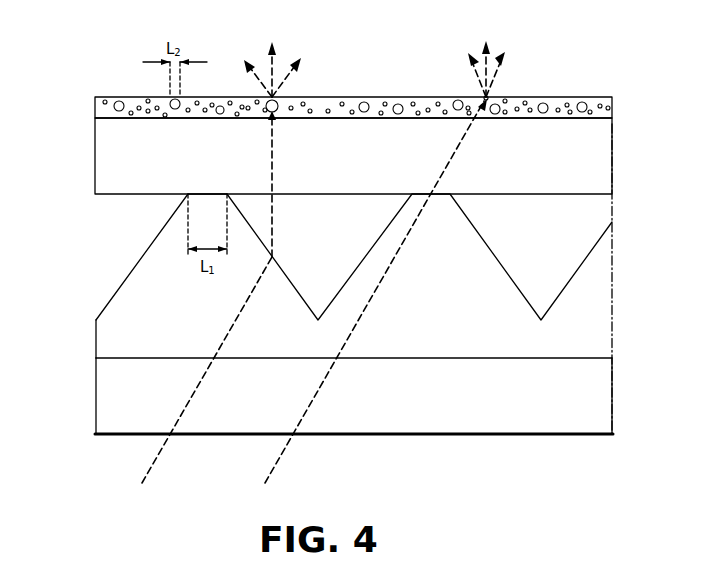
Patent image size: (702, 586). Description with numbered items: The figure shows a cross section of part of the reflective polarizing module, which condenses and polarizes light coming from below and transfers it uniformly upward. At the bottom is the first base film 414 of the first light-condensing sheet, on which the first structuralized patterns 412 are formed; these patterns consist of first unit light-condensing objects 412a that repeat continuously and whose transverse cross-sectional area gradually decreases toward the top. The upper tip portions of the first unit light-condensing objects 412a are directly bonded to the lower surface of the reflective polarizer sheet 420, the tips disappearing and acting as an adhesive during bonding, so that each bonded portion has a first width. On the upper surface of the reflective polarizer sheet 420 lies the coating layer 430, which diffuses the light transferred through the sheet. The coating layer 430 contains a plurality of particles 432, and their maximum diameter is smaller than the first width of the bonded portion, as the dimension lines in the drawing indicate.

The coating layer 430 is at (113, 106).
The particles 432 is at (116, 100).
The reflective polarizer sheet 420 is at (110, 162).
The first structuralized patterns 412 is at (124, 275).
The first unit light-condensing objects 412a is at (110, 318).
The first base film 414 is at (108, 393).